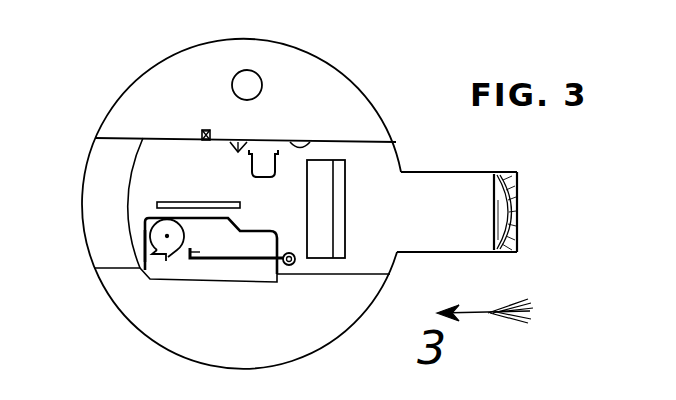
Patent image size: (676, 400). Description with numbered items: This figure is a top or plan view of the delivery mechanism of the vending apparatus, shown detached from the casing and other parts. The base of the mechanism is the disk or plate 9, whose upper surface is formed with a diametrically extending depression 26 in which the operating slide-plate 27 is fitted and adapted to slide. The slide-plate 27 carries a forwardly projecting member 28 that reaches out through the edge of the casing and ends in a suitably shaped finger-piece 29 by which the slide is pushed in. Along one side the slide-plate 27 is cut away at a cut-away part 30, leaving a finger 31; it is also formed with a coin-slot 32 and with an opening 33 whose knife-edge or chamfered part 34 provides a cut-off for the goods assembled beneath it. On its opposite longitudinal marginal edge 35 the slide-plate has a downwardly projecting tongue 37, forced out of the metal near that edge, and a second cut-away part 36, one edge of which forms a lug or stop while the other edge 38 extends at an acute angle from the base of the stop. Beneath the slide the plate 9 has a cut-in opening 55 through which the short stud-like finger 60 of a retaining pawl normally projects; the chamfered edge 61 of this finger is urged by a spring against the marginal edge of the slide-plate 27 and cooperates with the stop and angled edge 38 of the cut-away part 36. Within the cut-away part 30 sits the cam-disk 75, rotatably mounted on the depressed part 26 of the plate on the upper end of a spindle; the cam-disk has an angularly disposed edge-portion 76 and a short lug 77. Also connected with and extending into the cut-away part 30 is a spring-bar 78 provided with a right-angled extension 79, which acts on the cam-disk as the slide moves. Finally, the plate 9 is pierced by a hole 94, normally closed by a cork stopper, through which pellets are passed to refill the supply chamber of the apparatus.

The plate 9 is at (143, 84).
The depression 26 is at (95, 160).
The operating slide-plate 27 is at (157, 153).
The forwardly projecting member 28 is at (459, 184).
The finger-piece 29 is at (517, 197).
The cut-away part 30 is at (256, 240).
The finger 31 is at (138, 245).
The coin-slot 32 is at (183, 203).
The opening 33 is at (321, 250).
The knife-edge 34 is at (338, 222).
The longitudinal marginal edge 35 is at (306, 145).
The cut-away part 36 is at (238, 149).
The downwardly projecting tongue 37 is at (273, 153).
The edge 38 is at (236, 146).
The cut-in opening 55 is at (203, 129).
The stud-like finger 60 is at (206, 129).
The chamfered edge 61 is at (207, 140).
The cam-disk 75 is at (163, 230).
The angularly disposed edge-portion 76 is at (174, 253).
The short lug 77 is at (168, 260).
The spring-bar 78 is at (250, 265).
The right-angled extension 79 is at (193, 256).
The hole 94 is at (251, 80).